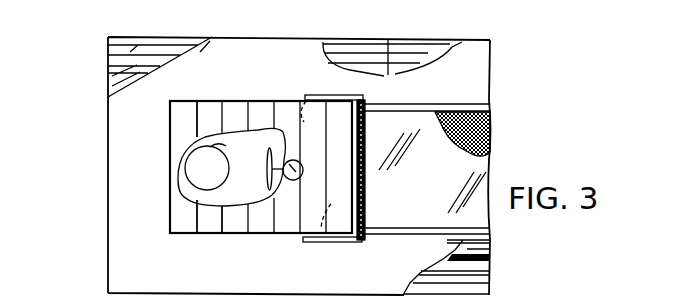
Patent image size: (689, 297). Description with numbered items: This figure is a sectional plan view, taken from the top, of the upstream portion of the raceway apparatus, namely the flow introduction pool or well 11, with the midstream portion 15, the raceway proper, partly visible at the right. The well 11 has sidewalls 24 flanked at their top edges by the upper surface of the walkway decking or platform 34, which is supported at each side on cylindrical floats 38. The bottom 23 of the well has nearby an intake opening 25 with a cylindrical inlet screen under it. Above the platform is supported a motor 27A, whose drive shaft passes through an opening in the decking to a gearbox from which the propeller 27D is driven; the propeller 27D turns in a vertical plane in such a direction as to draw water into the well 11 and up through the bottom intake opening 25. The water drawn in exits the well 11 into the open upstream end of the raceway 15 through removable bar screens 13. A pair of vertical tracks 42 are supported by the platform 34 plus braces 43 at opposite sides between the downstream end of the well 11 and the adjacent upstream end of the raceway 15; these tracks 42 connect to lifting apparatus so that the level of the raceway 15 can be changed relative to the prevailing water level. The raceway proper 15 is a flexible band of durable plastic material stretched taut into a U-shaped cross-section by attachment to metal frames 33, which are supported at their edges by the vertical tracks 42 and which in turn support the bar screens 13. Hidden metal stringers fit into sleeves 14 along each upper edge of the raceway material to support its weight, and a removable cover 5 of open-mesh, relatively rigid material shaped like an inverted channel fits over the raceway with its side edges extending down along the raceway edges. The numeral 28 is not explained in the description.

The removable cover 5 is at (488, 111).
The flow introduction pool or well 11 is at (237, 96).
The removable bar screens 13 is at (366, 193).
The sleeves 14 is at (414, 101).
The midstream portion 15 is at (441, 170).
The bottom 23 is at (215, 202).
The sidewalls 24 is at (321, 164).
The intake opening 25 is at (212, 146).
The motor 27A is at (298, 153).
The propeller 27D is at (258, 174).
The partition wall 28 is at (192, 123).
The metal frames 33 is at (366, 207).
The walkway decking or platform 34 is at (499, 73).
The cylindrical floats 38 is at (86, 81).
The vertical tracks 42 is at (368, 100).
The braces 43 is at (325, 95).